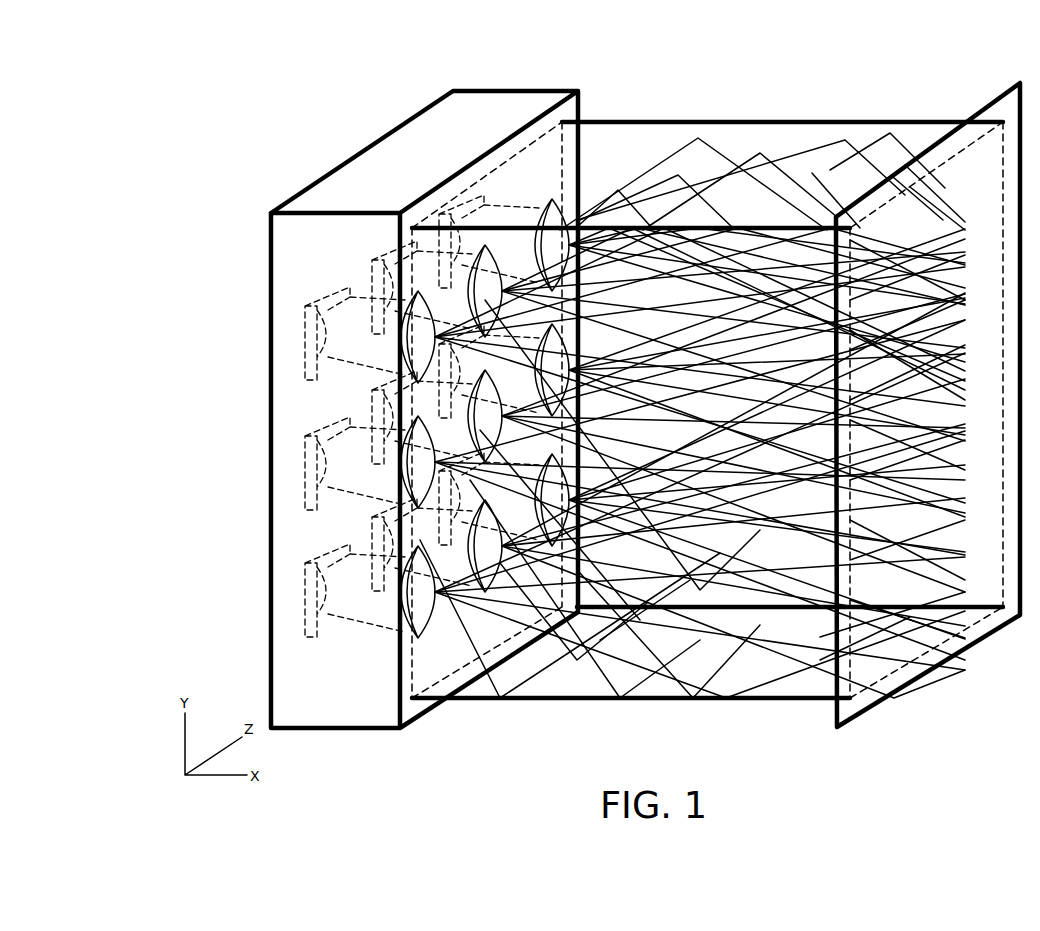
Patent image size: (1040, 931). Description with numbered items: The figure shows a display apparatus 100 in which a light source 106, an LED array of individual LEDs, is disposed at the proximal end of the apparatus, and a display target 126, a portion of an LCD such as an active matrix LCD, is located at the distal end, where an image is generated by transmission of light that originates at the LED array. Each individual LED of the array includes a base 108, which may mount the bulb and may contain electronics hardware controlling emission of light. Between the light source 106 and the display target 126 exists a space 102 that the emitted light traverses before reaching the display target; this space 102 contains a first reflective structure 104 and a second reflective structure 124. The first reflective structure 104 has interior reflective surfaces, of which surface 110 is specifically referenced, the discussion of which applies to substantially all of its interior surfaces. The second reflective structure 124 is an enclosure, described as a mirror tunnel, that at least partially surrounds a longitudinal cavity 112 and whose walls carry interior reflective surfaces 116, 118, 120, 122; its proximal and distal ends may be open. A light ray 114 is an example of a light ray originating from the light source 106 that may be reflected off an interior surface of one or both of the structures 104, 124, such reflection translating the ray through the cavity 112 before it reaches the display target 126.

The display apparatus 100 is at (240, 140).
The space 102 is at (1005, 64).
The first reflective structure 104 is at (402, 145).
The light source 106 is at (262, 472).
The base 108 is at (327, 312).
The interior reflective surface 110 is at (418, 620).
The longitudinal cavity 112 is at (632, 138).
The light ray 114 is at (815, 150).
The interior reflective surface 116 is at (673, 464).
The interior reflective surface 118 is at (709, 658).
The interior reflective surface 120 is at (732, 202).
The interior reflective surface 122 is at (809, 396).
The second reflective structure 124 is at (532, 718).
The display target 126 is at (840, 732).